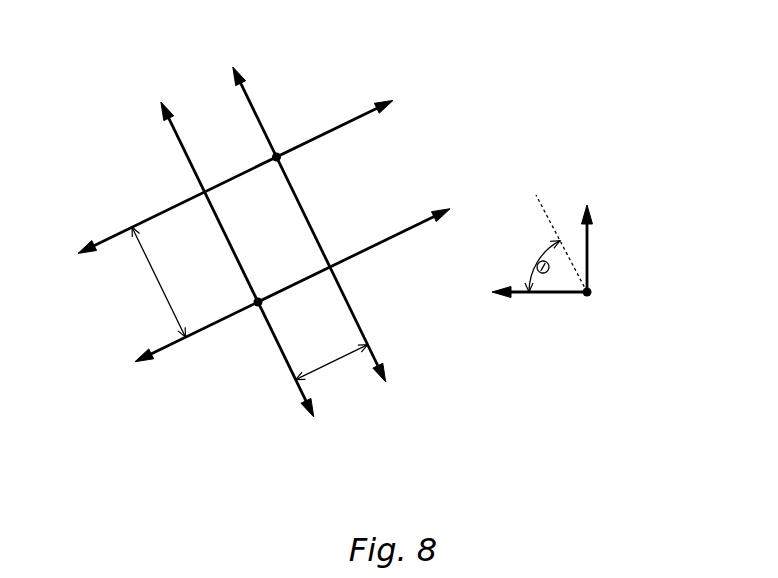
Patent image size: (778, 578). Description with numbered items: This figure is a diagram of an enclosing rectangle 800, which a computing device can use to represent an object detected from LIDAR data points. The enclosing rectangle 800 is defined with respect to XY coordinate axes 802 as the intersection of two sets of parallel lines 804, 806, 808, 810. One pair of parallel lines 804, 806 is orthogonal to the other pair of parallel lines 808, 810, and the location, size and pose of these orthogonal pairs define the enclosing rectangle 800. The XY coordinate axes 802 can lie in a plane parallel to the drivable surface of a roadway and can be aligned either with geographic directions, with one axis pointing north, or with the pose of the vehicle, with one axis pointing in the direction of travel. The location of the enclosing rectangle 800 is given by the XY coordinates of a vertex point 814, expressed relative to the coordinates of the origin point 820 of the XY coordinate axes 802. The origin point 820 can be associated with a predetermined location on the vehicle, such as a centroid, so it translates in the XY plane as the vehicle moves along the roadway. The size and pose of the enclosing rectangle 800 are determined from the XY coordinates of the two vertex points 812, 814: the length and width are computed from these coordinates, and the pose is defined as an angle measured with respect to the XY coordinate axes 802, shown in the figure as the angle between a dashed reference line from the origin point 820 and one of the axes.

The enclosing rectangle 800 is at (98, 152).
The XY coordinate axes 802 is at (662, 256).
The parallel line 804 is at (247, 280).
The parallel line 806 is at (312, 225).
The parallel line 808 is at (219, 180).
The parallel line 810 is at (308, 280).
The vertex point 812 is at (278, 153).
The vertex point 814 is at (259, 306).
The origin point 820 is at (590, 295).